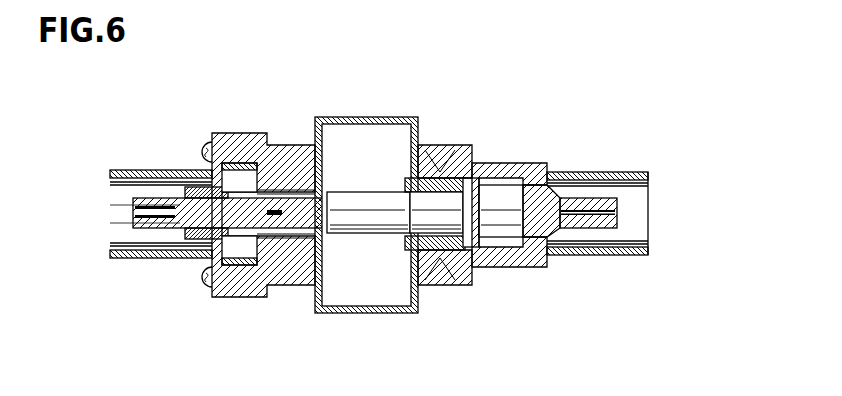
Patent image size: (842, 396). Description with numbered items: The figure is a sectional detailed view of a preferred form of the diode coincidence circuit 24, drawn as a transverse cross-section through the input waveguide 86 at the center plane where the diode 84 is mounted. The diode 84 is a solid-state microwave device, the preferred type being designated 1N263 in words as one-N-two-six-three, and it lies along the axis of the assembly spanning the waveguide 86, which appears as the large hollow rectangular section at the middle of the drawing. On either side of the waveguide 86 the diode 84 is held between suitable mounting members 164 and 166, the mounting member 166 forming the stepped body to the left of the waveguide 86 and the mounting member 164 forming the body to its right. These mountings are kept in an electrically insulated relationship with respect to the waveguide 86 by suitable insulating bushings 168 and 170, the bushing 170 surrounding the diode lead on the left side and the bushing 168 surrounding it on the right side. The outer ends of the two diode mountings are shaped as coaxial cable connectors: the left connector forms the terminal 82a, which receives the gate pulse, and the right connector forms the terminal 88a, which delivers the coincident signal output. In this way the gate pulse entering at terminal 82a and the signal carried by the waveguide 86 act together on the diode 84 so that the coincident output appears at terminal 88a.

The coincidence circuit 24 is at (286, 126).
The terminal 82a is at (120, 172).
The diode 84 is at (421, 213).
The input waveguide 86 is at (399, 117).
The terminal 88a is at (600, 172).
The mounting member 164 is at (445, 285).
The mounting member 166 is at (245, 297).
The insulating bushing 168 is at (542, 245).
The insulating bushing 170 is at (186, 239).